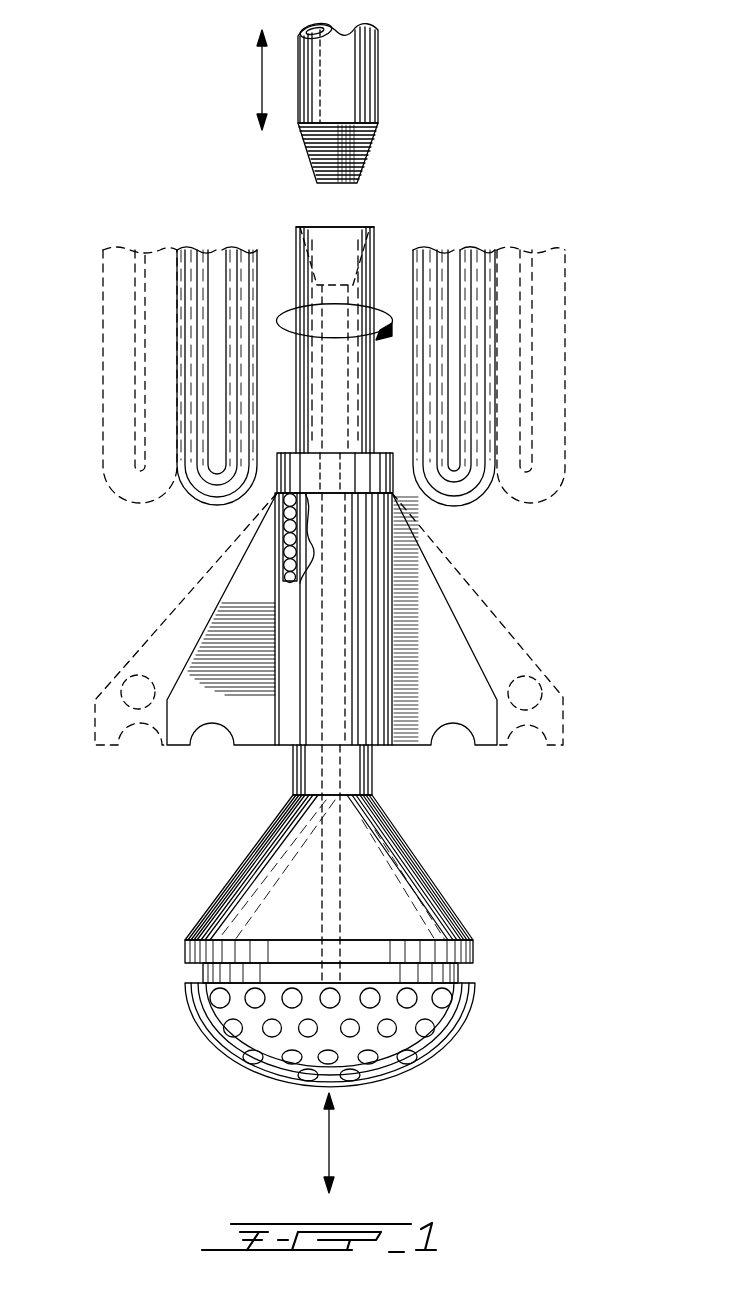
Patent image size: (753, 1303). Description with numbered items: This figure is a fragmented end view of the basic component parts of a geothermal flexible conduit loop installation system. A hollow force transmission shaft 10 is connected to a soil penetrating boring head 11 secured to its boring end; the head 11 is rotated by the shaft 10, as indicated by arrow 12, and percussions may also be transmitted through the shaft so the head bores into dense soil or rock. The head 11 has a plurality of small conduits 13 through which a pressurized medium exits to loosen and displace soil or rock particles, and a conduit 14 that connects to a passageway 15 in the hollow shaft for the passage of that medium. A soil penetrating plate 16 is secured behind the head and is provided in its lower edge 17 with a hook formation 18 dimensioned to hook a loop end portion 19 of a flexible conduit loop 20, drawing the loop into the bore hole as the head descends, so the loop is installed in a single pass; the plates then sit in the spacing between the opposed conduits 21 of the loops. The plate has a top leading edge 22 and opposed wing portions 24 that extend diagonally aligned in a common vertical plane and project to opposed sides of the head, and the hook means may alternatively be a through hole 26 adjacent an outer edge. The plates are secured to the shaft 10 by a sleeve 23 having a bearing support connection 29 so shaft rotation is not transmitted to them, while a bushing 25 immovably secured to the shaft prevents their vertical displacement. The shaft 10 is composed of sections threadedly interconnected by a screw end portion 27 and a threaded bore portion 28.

The hollow force transmission shaft 10 is at (355, 95).
The soil penetrating boring head 11 is at (360, 920).
The arrow 12 is at (296, 312).
The small conduits 13 is at (250, 1058).
The conduit 14 is at (342, 830).
The passageway 15 is at (350, 28).
The soil penetrating plate 16 is at (433, 610).
The lower edge 17 is at (245, 745).
The hook formation 18 is at (203, 742).
The loop end portion 19 is at (460, 483).
The flexible conduit loop 20 is at (192, 268).
The conduit 21 is at (195, 345).
The top leading edge 22 is at (235, 575).
The sleeve 23 is at (286, 748).
The wing portion 24 is at (220, 640).
The bushing 25 is at (393, 468).
The through hole 26 is at (125, 675).
The screw end portion 27 is at (360, 162).
The threaded bore portion 28 is at (362, 220).
The bearing support connection 29 is at (290, 522).